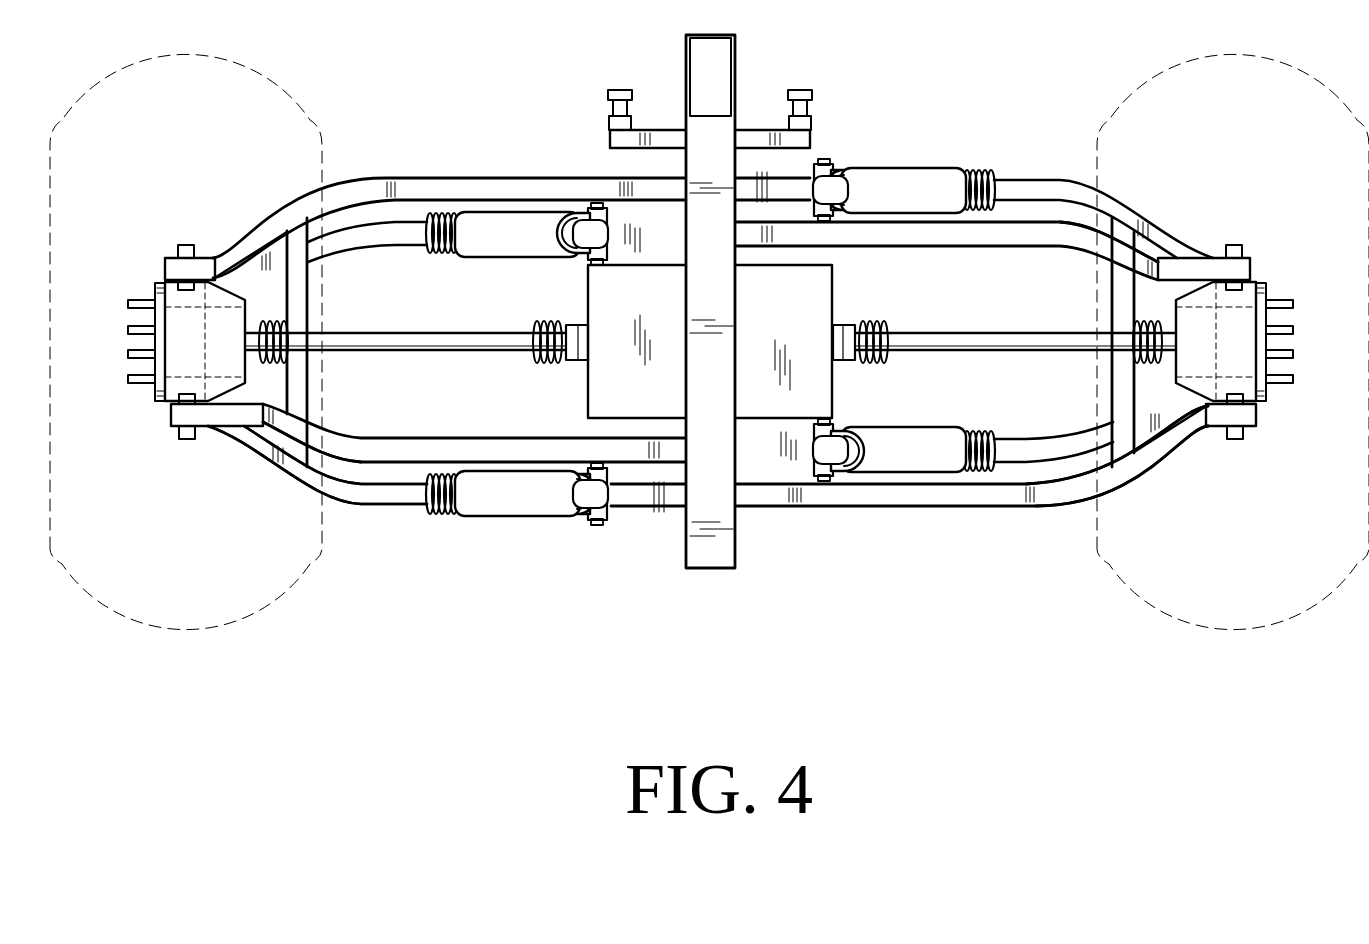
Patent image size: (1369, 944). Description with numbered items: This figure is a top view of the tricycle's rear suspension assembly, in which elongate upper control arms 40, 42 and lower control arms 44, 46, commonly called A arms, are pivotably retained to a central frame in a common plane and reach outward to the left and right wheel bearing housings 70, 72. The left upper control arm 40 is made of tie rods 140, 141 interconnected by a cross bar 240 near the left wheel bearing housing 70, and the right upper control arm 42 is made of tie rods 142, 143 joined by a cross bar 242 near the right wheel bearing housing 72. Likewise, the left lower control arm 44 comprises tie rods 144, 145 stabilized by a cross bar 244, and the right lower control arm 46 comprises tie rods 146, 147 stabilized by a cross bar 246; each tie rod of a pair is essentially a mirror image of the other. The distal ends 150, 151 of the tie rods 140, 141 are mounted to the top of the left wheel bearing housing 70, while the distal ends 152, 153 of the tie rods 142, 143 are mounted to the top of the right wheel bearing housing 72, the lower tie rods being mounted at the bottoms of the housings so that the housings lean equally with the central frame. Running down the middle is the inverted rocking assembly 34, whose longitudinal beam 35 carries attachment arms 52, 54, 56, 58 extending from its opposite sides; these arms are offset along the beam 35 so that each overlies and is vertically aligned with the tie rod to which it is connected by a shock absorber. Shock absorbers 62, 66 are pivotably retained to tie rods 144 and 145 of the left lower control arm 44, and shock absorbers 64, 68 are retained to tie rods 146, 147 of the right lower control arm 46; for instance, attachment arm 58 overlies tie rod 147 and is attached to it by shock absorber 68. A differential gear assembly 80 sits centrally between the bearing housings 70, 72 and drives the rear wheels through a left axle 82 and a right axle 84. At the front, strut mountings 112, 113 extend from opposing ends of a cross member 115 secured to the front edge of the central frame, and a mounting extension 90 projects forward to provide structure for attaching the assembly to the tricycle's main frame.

The inverted rocking assembly 34 is at (708, 570).
The longitudinal beam 35 is at (712, 153).
The mounting extension 90 is at (735, 67).
The strut mounting 112 is at (810, 108).
The strut mounting 113 is at (607, 110).
The cross member 115 is at (662, 128).
The left upper control arm 40 is at (333, 497).
The right upper control arm 42 is at (1090, 487).
The left lower control arm 44 is at (250, 445).
The right lower control arm 46 is at (1165, 435).
The attachment arm 52 is at (657, 505).
The attachment arm 54 is at (790, 460).
The attachment arm 56 is at (653, 233).
The attachment arm 58 is at (795, 185).
The shock absorber 62 is at (493, 497).
The shock absorber 64 is at (922, 453).
The shock absorber 66 is at (508, 230).
The shock absorber 68 is at (907, 182).
The left wheel bearing housing 70 is at (187, 338).
The right wheel bearing housing 72 is at (1235, 343).
The differential gear assembly 80 is at (813, 397).
The left axle 82 is at (423, 332).
The right axle 84 is at (935, 330).
The tie rod 140 is at (353, 186).
The tie rod 141 is at (313, 433).
The tie rod 142 is at (1043, 507).
The tie rod 143 is at (1070, 240).
The tie rod 144 is at (338, 240).
The tie rod 145 is at (375, 497).
The tie rod 146 is at (1073, 445).
The tie rod 147 is at (1112, 200).
The distal end 150 is at (175, 272).
The distal end 151 is at (180, 413).
The distal end 152 is at (1250, 418).
The distal end 153 is at (1245, 268).
The cross bar 240 is at (300, 362).
The cross bar 242 is at (1118, 320).
The cross bar 244 is at (293, 447).
The cross bar 246 is at (1125, 238).